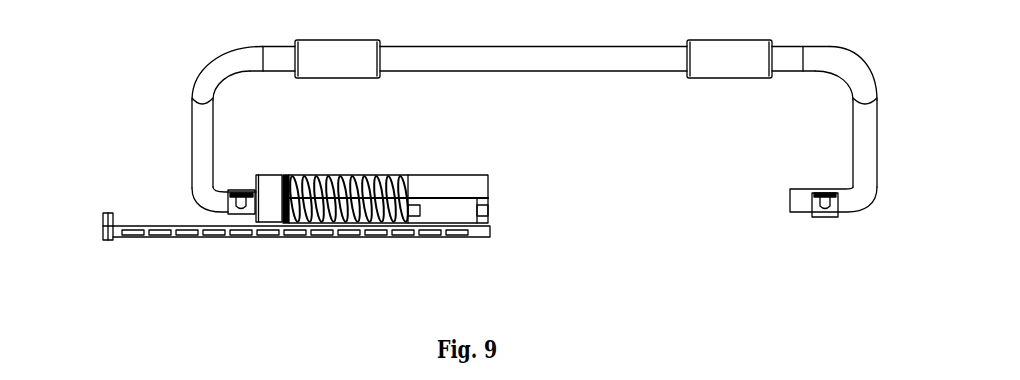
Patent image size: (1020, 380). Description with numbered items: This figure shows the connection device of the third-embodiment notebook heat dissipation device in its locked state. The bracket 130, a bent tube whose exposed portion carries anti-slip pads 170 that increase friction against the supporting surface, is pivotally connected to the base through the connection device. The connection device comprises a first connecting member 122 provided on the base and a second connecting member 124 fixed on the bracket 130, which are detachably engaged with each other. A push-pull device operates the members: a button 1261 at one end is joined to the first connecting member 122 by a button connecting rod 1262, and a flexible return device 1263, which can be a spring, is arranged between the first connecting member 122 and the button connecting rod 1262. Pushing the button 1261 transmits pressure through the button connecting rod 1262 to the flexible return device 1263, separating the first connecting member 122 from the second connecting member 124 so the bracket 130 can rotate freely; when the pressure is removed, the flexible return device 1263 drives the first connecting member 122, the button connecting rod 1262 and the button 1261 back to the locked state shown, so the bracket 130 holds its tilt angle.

The bracket 130 is at (530, 57).
The anti-slip pads 170 is at (723, 67).
The second connecting member 124 is at (262, 208).
The first connecting member 122 is at (277, 212).
The flexible return device 1263 is at (345, 212).
The button connecting rod 1262 is at (173, 230).
The button 1261 is at (103, 232).